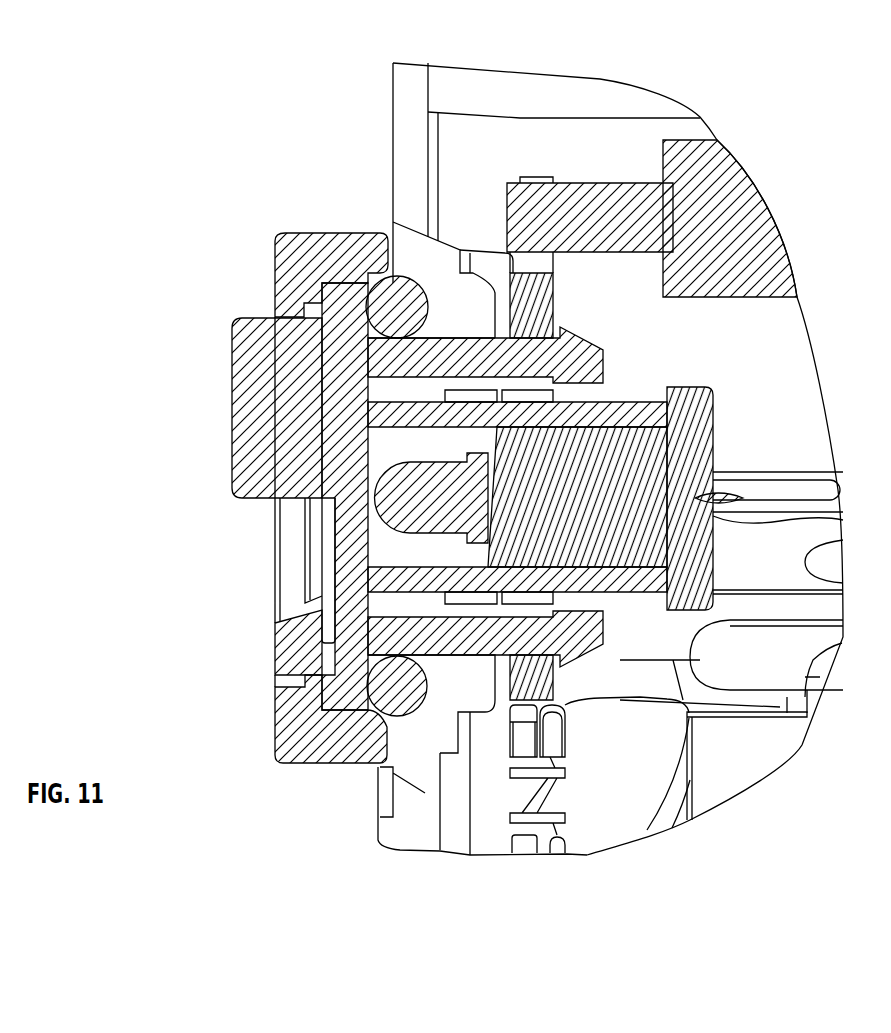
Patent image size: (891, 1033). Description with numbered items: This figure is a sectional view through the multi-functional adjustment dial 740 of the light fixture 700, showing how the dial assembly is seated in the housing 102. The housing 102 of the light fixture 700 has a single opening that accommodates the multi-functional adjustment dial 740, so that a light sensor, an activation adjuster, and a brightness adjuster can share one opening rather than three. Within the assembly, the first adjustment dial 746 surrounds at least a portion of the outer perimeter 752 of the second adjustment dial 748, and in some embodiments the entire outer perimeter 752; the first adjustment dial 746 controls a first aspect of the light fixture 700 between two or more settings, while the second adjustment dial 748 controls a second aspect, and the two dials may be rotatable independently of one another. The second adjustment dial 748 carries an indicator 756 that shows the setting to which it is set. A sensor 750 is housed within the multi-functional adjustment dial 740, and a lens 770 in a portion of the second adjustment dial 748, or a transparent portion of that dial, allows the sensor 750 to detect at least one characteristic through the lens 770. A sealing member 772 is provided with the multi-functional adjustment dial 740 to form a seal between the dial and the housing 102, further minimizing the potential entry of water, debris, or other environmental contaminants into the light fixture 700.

The housing 102 is at (402, 115).
The light fixture 700 is at (131, 188).
The multi-functional adjustment dial 740 is at (307, 250).
The first adjustment dial 746 is at (348, 250).
The second adjustment dial 748 is at (337, 402).
The sensor 750 is at (500, 480).
The outer perimeter 752 is at (350, 710).
The indicator 756 is at (253, 467).
The lens 770 is at (333, 593).
The sealing member 772 is at (397, 293).